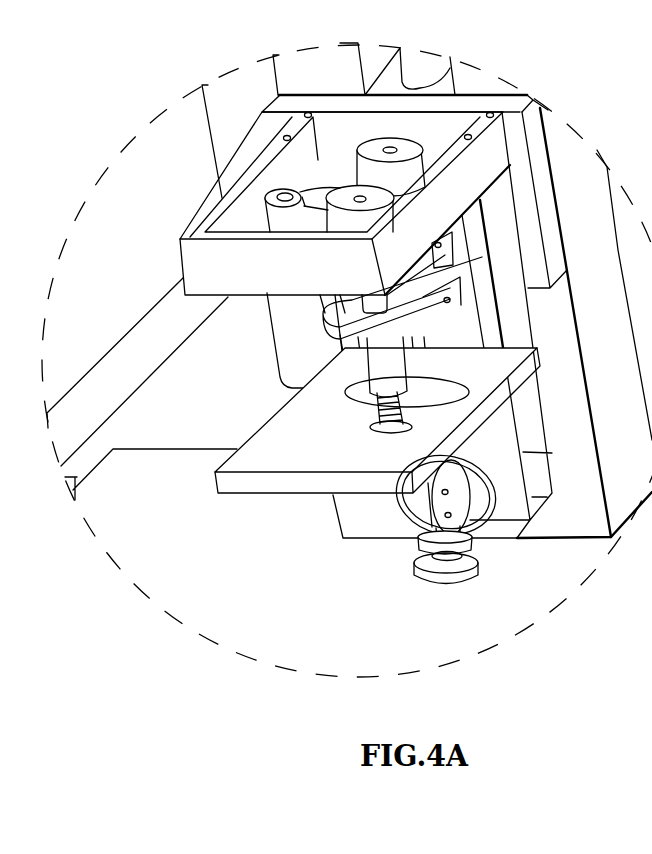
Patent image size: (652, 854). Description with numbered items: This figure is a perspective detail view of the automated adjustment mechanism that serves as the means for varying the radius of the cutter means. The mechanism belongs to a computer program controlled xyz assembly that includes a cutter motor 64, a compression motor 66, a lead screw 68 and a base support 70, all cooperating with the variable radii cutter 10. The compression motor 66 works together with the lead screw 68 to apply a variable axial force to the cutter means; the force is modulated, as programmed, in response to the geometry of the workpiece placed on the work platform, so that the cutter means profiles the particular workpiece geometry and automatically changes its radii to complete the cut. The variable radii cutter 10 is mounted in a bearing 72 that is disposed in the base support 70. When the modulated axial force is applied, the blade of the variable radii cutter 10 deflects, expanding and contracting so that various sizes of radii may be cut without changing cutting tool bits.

The variable radii cutter 10 is at (399, 523).
The cutter motor 64 is at (358, 172).
The compression motor 66 is at (273, 352).
The lead screw 68 is at (380, 407).
The base support 70 is at (420, 572).
The bearing 72 is at (478, 558).